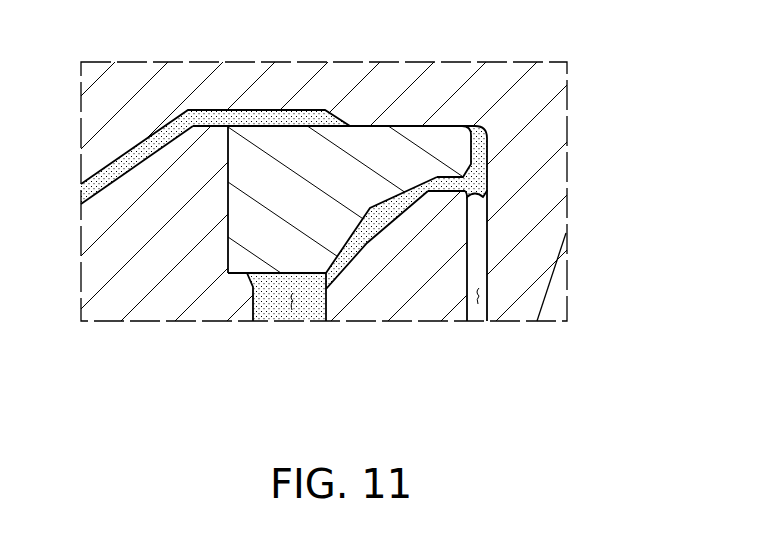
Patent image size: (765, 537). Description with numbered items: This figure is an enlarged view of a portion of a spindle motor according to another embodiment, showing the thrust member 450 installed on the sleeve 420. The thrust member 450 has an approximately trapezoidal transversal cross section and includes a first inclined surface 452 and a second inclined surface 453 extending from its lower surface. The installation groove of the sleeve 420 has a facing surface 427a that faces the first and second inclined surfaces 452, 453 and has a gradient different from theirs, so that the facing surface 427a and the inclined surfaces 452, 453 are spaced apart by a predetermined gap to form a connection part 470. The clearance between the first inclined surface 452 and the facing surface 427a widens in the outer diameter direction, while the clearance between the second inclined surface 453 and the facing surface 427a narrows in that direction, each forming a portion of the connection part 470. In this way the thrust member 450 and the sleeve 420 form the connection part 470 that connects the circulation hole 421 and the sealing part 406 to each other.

The sealing part 406 is at (483, 300).
The sleeve 420 is at (423, 306).
The circulation hole 421 is at (292, 303).
The facing surface 427a is at (354, 250).
The thrust member 450 is at (285, 158).
The first inclined surface 452 is at (316, 300).
The second inclined surface 453 is at (484, 183).
The connection part 470 is at (423, 203).